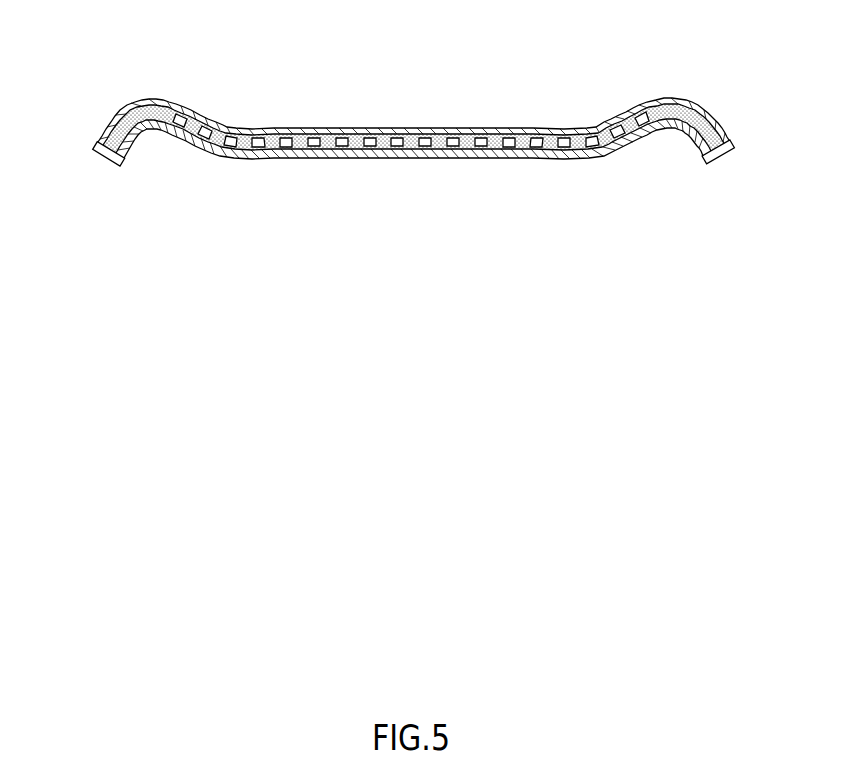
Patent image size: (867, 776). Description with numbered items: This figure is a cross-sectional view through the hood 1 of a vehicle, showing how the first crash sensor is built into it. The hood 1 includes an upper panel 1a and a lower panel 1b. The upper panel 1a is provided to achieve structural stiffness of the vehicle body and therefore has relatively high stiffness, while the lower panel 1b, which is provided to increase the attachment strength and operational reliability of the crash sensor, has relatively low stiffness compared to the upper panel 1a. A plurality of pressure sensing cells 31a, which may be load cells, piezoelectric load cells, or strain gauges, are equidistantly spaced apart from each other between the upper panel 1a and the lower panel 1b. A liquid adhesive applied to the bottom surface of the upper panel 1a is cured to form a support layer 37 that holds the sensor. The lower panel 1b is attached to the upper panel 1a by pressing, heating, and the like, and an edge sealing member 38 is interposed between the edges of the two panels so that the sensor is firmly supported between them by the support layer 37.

The hood 1 is at (410, 130).
The upper panel 1a is at (492, 128).
The lower panel 1b is at (463, 160).
The pressure sensing cells 31a is at (290, 130).
The support layer 37 is at (243, 127).
The edge sealing member 38 is at (100, 167).